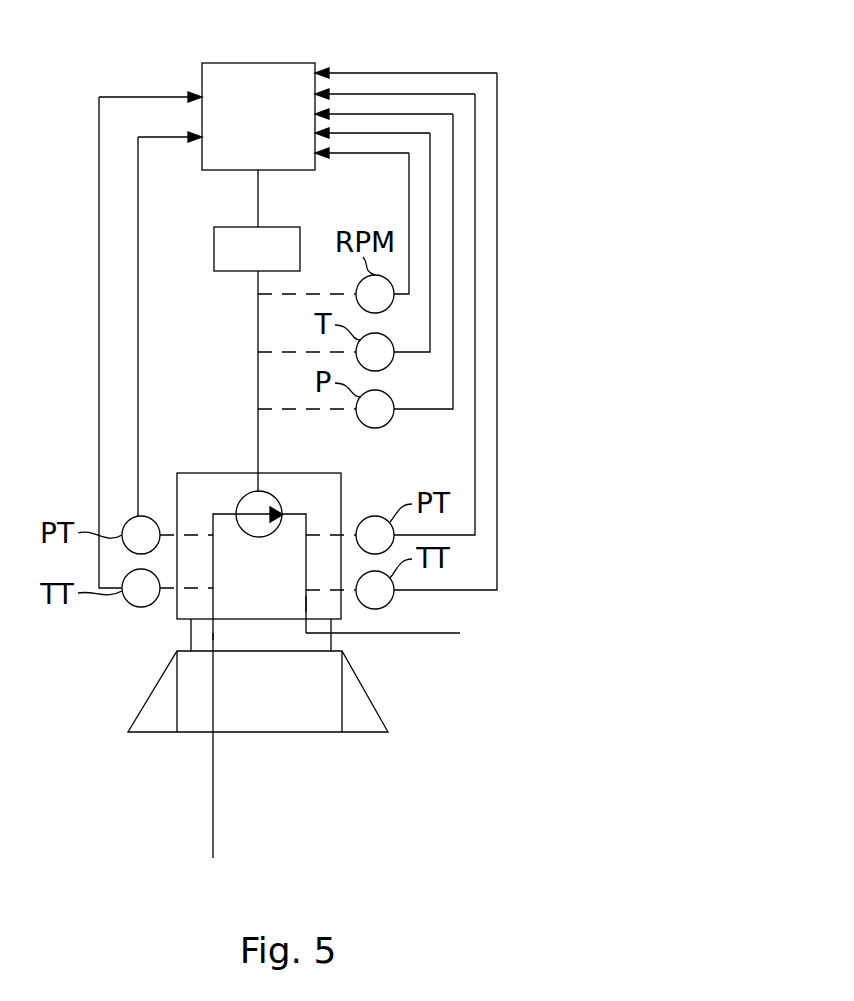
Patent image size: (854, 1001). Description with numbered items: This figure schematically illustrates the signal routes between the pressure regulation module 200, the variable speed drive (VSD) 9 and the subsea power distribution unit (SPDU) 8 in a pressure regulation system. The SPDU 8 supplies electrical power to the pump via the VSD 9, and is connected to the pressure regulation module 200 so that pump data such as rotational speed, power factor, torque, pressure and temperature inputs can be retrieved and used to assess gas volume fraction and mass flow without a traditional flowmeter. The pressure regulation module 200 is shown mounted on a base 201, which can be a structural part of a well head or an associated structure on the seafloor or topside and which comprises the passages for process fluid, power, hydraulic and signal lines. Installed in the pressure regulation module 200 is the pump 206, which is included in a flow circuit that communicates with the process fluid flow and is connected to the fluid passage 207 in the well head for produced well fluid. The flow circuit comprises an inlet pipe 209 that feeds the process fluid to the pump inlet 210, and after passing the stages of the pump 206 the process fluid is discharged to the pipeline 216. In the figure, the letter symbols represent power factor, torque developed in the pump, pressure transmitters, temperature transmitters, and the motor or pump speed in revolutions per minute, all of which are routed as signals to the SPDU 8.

The subsea power distribution unit 8 is at (263, 63).
The variable speed drive 9 is at (288, 227).
The pressure regulation module 200 is at (216, 463).
The base 201 is at (183, 698).
The pump 206 is at (262, 537).
The fluid passage 207 is at (213, 785).
The inlet pipe 209 is at (213, 573).
The pump inlet 210 is at (306, 603).
The pipeline 216 is at (387, 635).